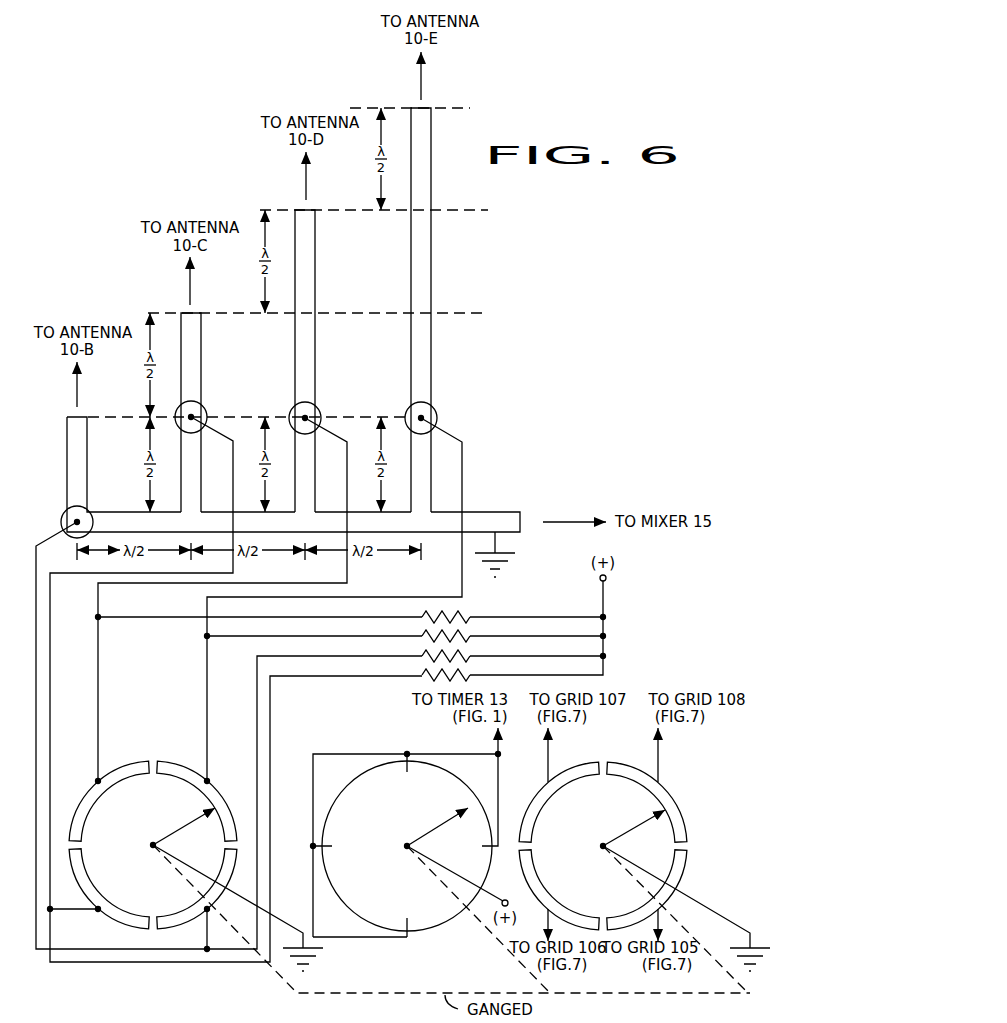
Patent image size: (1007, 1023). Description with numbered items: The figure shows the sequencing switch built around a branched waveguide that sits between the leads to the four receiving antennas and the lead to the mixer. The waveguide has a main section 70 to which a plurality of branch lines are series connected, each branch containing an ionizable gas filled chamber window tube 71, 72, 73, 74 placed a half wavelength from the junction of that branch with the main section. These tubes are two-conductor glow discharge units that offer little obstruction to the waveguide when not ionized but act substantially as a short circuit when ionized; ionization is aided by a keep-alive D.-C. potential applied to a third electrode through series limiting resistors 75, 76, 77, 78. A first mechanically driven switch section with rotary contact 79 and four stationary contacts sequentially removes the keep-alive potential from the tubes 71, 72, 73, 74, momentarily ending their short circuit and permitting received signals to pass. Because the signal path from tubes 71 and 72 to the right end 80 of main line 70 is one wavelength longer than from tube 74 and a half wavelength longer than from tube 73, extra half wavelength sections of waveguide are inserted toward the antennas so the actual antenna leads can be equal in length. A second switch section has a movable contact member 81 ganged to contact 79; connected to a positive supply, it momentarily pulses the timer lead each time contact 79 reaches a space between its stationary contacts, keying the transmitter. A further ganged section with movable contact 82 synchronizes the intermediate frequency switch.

The main section 70 is at (498, 511).
The ionizable gas filled chamber window tube 71 is at (89, 512).
The ionizable gas filled chamber window tube 72 is at (203, 407).
The ionizable gas filled chamber window tube 73 is at (317, 408).
The ionizable gas filled chamber window tube 74 is at (434, 408).
The series limiting resistor 75 is at (472, 655).
The series limiting resistor 76 is at (472, 674).
The series limiting resistor 77 is at (472, 616).
The series limiting resistor 78 is at (472, 635).
The rotary contact 79 is at (173, 834).
The right end of main line 80 is at (524, 524).
The movable contact member 81 is at (431, 833).
The movable contact 82 is at (629, 833).